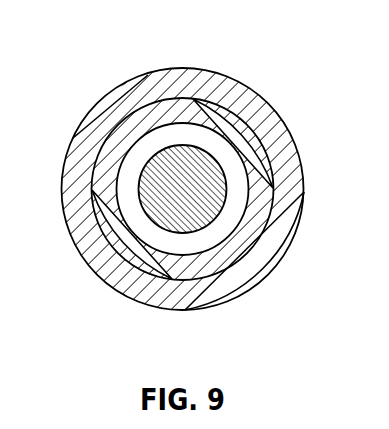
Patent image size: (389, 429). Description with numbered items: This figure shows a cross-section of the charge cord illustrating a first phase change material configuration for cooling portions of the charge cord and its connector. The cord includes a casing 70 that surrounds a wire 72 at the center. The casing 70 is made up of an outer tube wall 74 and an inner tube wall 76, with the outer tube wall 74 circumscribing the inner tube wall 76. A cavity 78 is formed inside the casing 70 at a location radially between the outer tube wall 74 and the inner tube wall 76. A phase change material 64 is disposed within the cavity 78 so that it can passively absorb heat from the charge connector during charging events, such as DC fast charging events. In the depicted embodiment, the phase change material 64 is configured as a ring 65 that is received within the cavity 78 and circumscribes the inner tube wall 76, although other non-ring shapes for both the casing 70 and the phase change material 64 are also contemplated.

The casing 70 is at (281, 66).
The outer tube wall 74 is at (270, 250).
The cavity 78 is at (273, 220).
The ring 65 is at (270, 146).
The phase change material 64 is at (256, 194).
The inner tube wall 76 is at (127, 171).
The wire 72 is at (165, 197).